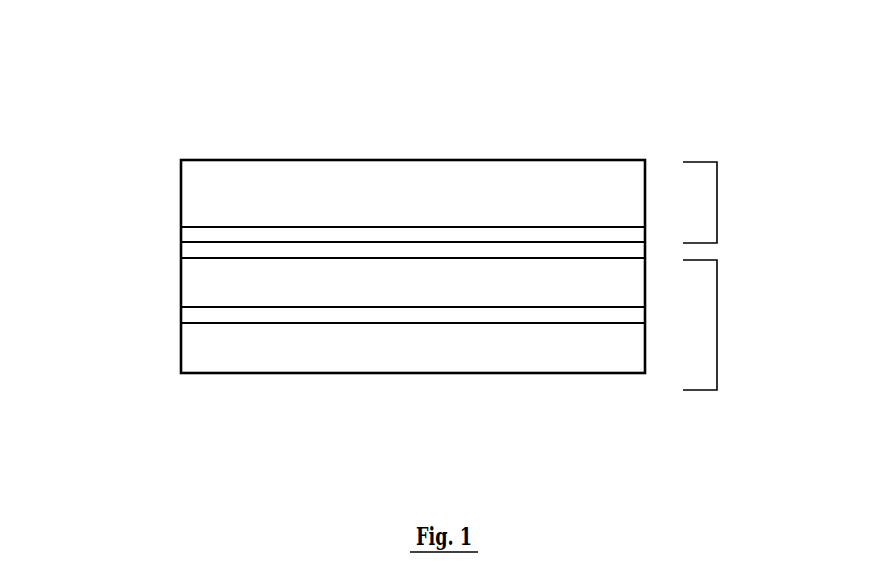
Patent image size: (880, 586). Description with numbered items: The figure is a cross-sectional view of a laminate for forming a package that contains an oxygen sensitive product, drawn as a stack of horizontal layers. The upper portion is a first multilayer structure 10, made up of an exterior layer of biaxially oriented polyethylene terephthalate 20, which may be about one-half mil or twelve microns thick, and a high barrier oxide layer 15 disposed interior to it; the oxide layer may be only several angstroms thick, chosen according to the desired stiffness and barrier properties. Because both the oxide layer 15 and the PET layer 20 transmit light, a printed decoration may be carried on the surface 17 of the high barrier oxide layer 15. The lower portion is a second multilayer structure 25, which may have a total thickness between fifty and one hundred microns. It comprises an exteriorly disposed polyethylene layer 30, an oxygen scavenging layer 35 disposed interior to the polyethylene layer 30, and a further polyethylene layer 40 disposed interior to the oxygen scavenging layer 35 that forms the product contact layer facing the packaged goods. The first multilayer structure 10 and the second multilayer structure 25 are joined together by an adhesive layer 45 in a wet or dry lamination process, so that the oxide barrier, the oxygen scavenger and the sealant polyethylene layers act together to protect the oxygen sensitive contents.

The first multilayer structure 10 is at (717, 202).
The high barrier oxide layer 15 is at (413, 122).
The surface 17 is at (415, 152).
The layer of biaxially oriented polyethylene terephthalate 20 is at (413, 114).
The second multilayer structure 25 is at (717, 327).
The polyethylene layer 30 is at (329, 310).
The oxygen scavenging layer 35 is at (329, 389).
The further polyethylene layer 40 is at (413, 399).
The adhesive layer 45 is at (329, 276).